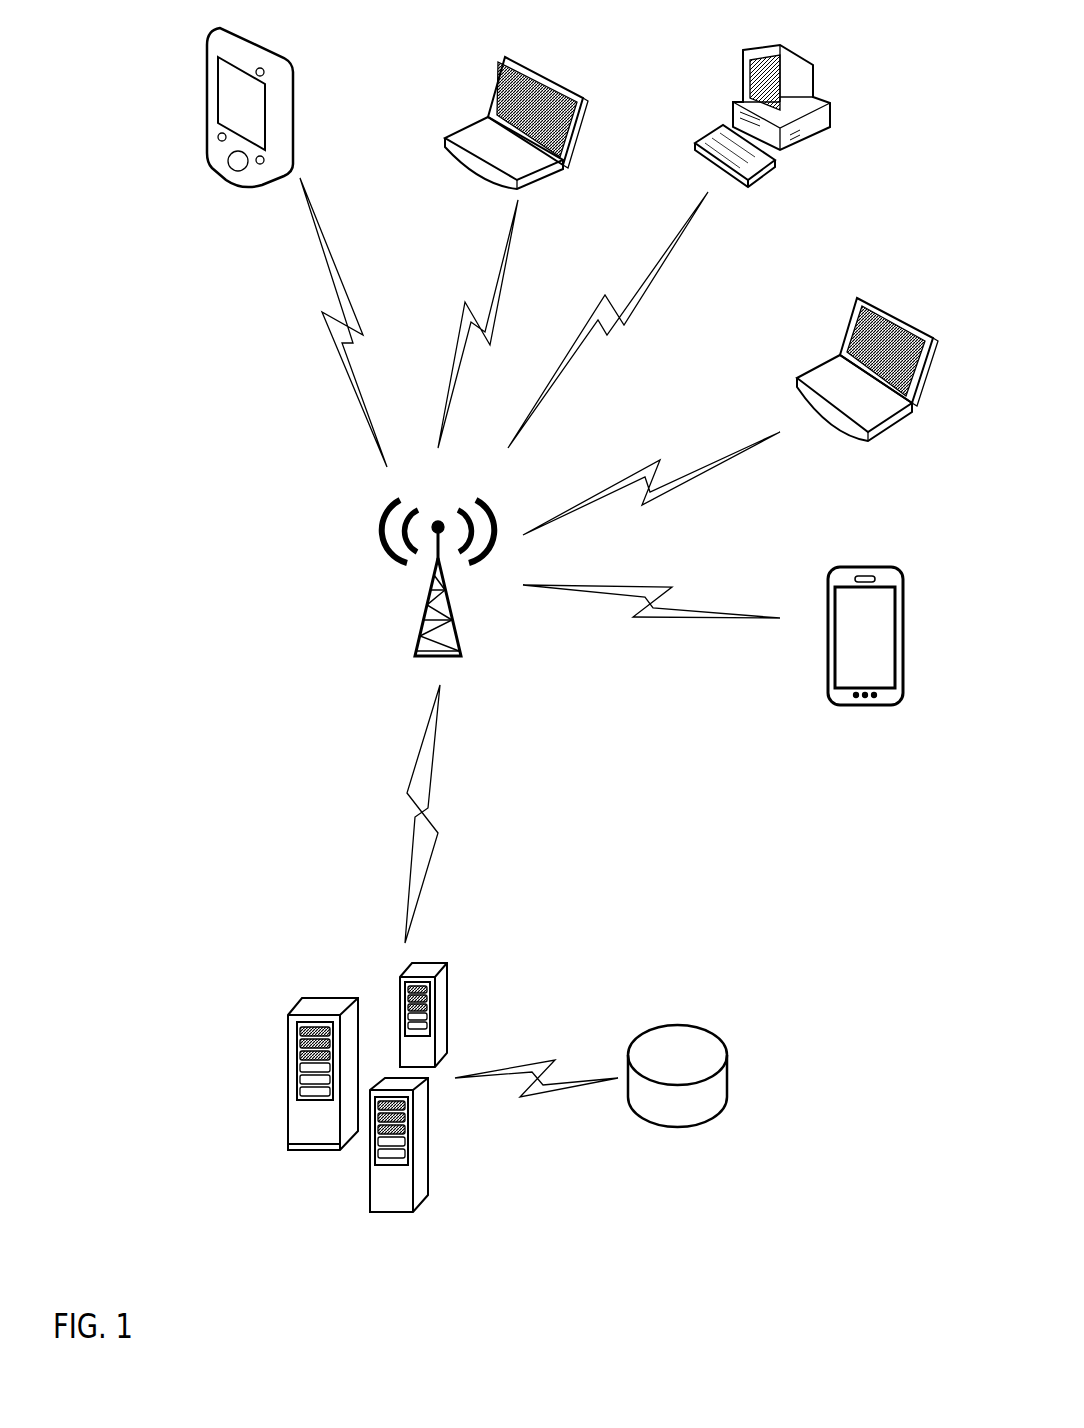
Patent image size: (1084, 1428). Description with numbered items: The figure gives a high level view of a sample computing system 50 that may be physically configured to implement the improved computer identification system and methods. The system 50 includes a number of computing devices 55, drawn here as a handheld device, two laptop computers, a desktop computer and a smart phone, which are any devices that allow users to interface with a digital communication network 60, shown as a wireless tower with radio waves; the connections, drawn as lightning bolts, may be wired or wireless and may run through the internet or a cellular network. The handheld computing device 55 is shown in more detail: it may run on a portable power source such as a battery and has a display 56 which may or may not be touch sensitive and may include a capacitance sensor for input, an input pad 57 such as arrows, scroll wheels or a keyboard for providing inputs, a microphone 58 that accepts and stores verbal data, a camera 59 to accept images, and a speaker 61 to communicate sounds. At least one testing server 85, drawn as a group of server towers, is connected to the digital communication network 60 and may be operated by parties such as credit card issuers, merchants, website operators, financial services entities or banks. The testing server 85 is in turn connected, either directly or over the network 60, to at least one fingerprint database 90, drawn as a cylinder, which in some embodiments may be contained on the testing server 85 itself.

The computing system 50 is at (147, 363).
The computing device 55 is at (203, 62).
The display 56 is at (230, 98).
The input pad 57 is at (217, 177).
The microphone 58 is at (217, 137).
The camera 59 is at (262, 68).
The digital communication network 60 is at (400, 608).
The speaker 61 is at (260, 165).
The testing server 85 is at (285, 1095).
The fingerprint database 90 is at (735, 1075).